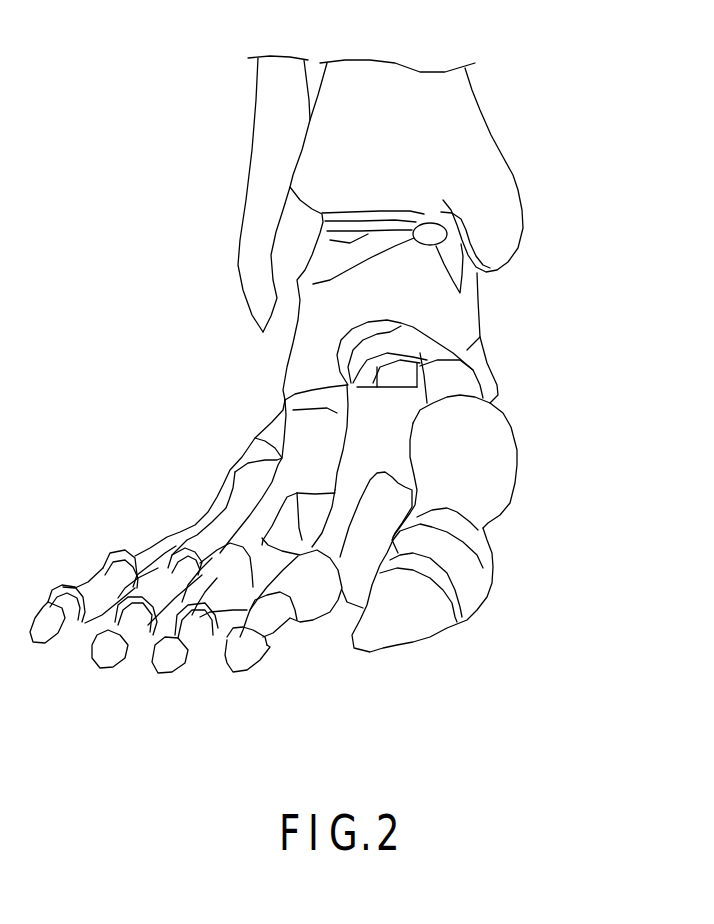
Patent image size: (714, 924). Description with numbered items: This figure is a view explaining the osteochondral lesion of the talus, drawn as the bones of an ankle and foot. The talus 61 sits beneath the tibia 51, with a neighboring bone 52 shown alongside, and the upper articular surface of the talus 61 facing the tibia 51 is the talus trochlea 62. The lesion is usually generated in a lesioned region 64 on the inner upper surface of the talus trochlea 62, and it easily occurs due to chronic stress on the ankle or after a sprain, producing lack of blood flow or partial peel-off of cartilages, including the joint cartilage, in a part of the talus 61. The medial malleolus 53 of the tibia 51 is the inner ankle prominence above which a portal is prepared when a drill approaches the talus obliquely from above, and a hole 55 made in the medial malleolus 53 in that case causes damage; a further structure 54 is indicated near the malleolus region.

The tibia 51 is at (320, 148).
The fibula 52 is at (270, 101).
The medial malleolus 53 is at (500, 177).
The ligament 54 is at (467, 240).
The hole 55 is at (440, 210).
The talus 61 is at (480, 337).
The talus trochlea 62 is at (320, 245).
The lesioned region 64 is at (450, 238).